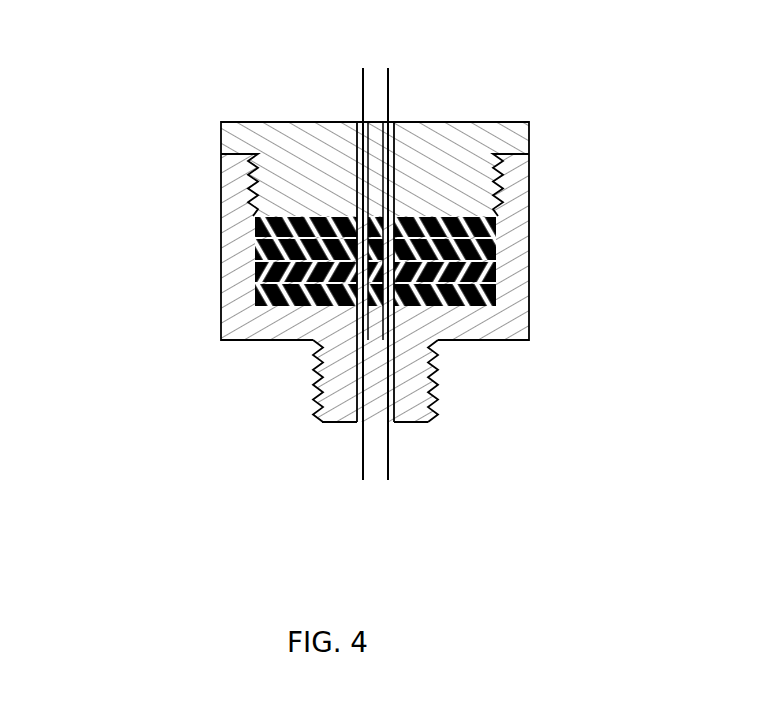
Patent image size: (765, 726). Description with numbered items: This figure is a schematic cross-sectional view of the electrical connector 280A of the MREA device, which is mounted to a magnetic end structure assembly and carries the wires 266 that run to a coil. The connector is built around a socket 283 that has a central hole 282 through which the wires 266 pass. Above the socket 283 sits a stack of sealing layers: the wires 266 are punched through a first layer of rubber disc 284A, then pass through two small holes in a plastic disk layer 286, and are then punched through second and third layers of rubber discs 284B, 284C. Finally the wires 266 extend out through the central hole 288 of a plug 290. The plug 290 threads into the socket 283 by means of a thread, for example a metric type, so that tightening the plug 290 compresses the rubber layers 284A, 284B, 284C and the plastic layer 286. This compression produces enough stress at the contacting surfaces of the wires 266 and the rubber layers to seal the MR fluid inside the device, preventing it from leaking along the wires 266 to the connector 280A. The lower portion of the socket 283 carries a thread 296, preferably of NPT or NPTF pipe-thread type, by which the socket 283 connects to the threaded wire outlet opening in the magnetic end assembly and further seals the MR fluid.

The electrical connector 280A is at (578, 112).
The plug 290 is at (271, 121).
The central hole 288 is at (391, 121).
The socket 283 is at (530, 210).
The third layer of rubber disc 284C is at (253, 230).
The second layer of rubber disc 284B is at (253, 250).
The plastic disk layer 286 is at (255, 272).
The first layer of rubber disc 284A is at (257, 297).
The thread 296 is at (317, 383).
The wires 266 is at (363, 466).
The central hole 282 is at (390, 428).